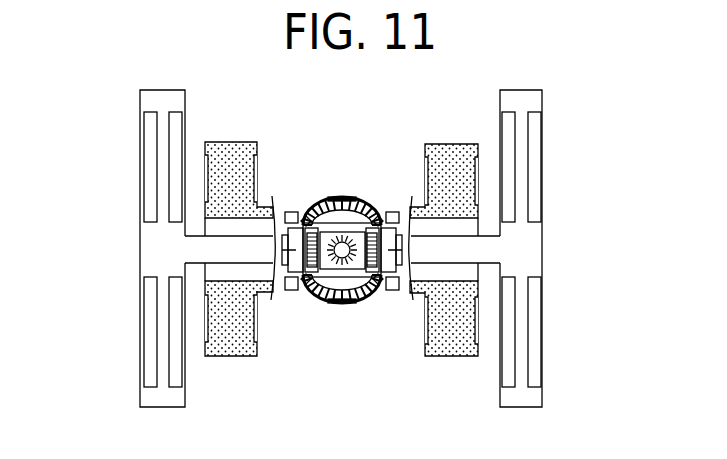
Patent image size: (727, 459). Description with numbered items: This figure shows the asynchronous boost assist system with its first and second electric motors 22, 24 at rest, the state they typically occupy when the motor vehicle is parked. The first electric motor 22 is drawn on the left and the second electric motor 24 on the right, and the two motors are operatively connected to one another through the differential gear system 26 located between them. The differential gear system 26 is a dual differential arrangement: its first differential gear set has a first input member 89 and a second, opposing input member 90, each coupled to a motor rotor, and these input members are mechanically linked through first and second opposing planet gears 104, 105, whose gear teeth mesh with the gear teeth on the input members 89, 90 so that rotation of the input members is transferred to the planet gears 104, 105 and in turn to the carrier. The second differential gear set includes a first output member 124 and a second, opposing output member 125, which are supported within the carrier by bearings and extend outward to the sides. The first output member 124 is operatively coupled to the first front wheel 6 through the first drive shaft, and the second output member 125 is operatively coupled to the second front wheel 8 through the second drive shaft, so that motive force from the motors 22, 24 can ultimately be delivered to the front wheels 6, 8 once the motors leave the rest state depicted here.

The first front wheel 6 is at (120, 188).
The second front wheel 8 is at (563, 190).
The first electric motor 22 is at (228, 134).
The second electric motor 24 is at (452, 367).
The differential gear system 26 is at (327, 321).
The first input member 89 is at (292, 292).
The second input member 90 is at (392, 201).
The first planet gear 104 is at (343, 197).
The second planet gear 105 is at (343, 304).
The first output member 124 is at (272, 245).
The second output member 125 is at (413, 247).